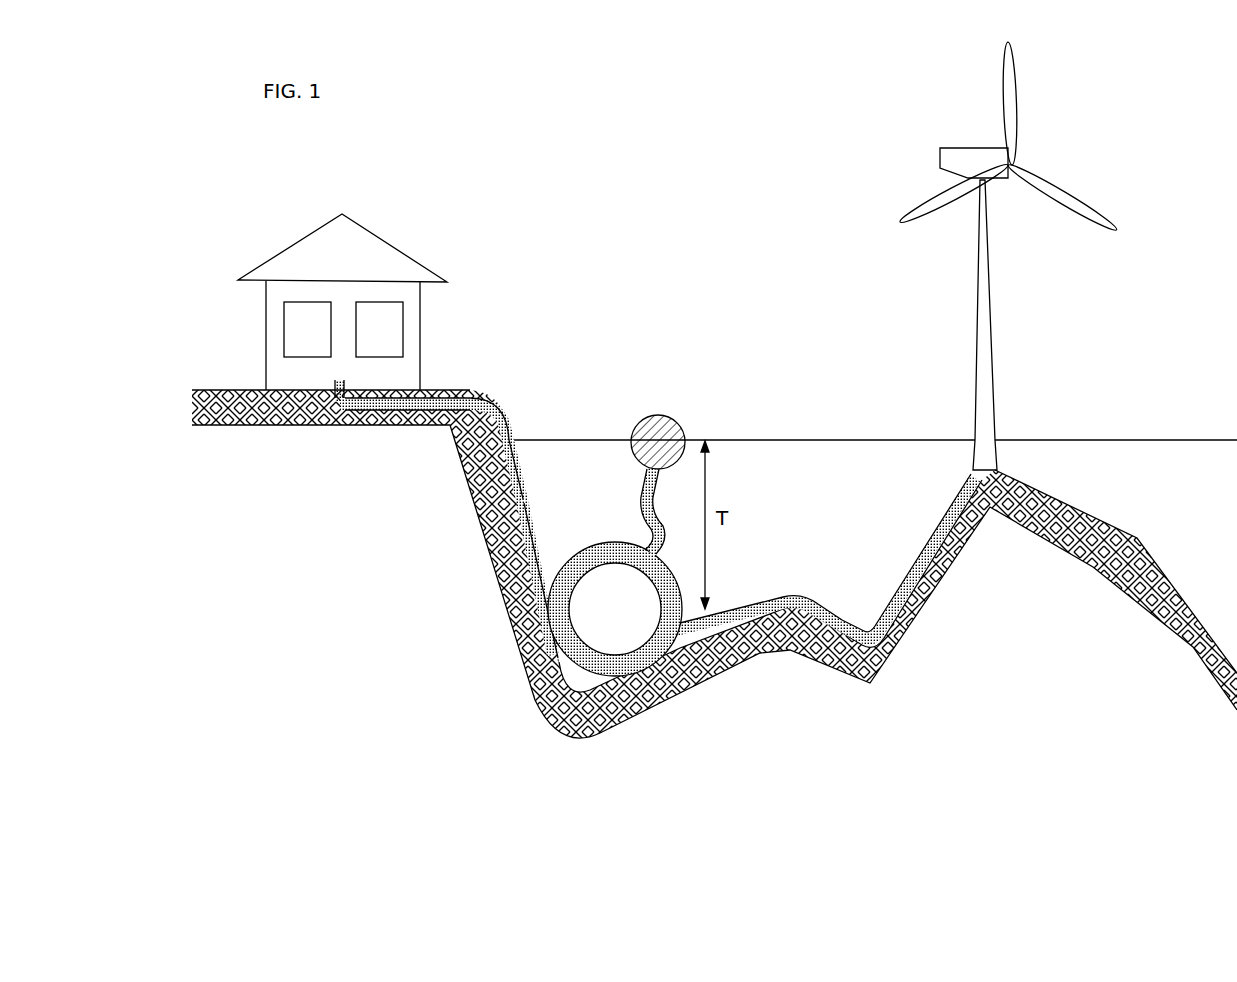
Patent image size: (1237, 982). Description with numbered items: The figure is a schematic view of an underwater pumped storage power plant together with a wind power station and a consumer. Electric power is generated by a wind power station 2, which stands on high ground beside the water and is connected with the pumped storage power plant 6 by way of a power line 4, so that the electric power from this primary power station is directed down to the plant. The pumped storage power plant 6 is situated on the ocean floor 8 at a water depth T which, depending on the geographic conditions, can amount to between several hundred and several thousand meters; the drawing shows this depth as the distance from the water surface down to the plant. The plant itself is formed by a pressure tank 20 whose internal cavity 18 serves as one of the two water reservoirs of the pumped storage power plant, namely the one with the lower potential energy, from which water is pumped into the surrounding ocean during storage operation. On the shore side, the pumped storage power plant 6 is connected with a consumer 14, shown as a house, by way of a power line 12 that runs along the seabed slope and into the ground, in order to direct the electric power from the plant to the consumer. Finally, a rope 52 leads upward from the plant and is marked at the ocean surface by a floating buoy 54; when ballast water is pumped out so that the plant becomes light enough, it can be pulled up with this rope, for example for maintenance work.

The wind power station 2 is at (993, 327).
The power line 4 is at (924, 557).
The pumped storage power plant 6 is at (553, 648).
The ocean floor 8 is at (678, 647).
The power line 12 is at (505, 420).
The consumer 14 is at (395, 246).
The internal cavity 18 is at (615, 609).
The pressure tank 20 is at (632, 658).
The rope 52 is at (643, 495).
The buoy 54 is at (670, 418).